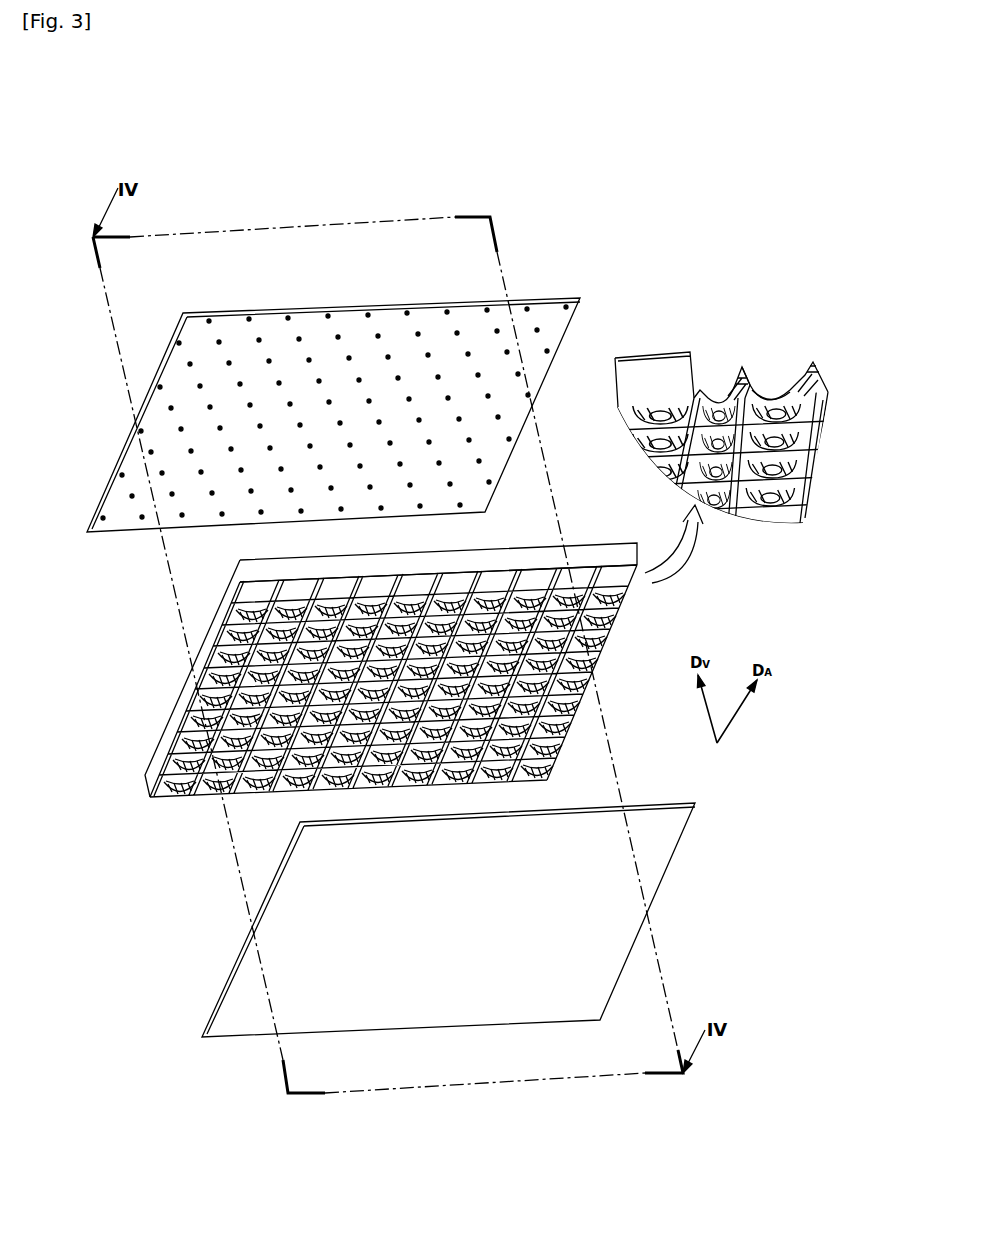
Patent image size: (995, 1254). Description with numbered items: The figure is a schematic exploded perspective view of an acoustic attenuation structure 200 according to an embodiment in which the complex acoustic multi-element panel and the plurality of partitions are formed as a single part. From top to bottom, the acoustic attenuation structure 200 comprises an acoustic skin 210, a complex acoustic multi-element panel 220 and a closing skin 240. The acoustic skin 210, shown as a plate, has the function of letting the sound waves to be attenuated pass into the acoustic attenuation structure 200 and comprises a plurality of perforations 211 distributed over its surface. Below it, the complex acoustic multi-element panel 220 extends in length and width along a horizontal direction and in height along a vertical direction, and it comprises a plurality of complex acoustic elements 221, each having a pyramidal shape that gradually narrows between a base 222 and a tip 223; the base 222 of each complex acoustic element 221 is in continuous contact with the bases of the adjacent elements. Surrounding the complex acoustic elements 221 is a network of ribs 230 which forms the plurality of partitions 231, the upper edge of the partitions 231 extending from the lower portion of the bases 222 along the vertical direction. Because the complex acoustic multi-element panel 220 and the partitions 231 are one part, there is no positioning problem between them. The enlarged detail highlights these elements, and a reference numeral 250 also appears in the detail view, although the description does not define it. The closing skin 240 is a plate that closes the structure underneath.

The acoustic attenuation structure 200 is at (588, 157).
The acoustic skin 210 is at (552, 292).
The perforations 211 is at (565, 352).
The complex acoustic multi-element panel 220 is at (607, 627).
The complex acoustic elements 221 is at (813, 375).
The base 222 is at (745, 375).
The tip 223 is at (812, 452).
The network of ribs 230 is at (590, 540).
The partitions 231 is at (553, 737).
The closing skin 240 is at (654, 800).
The recess 250 is at (783, 388).